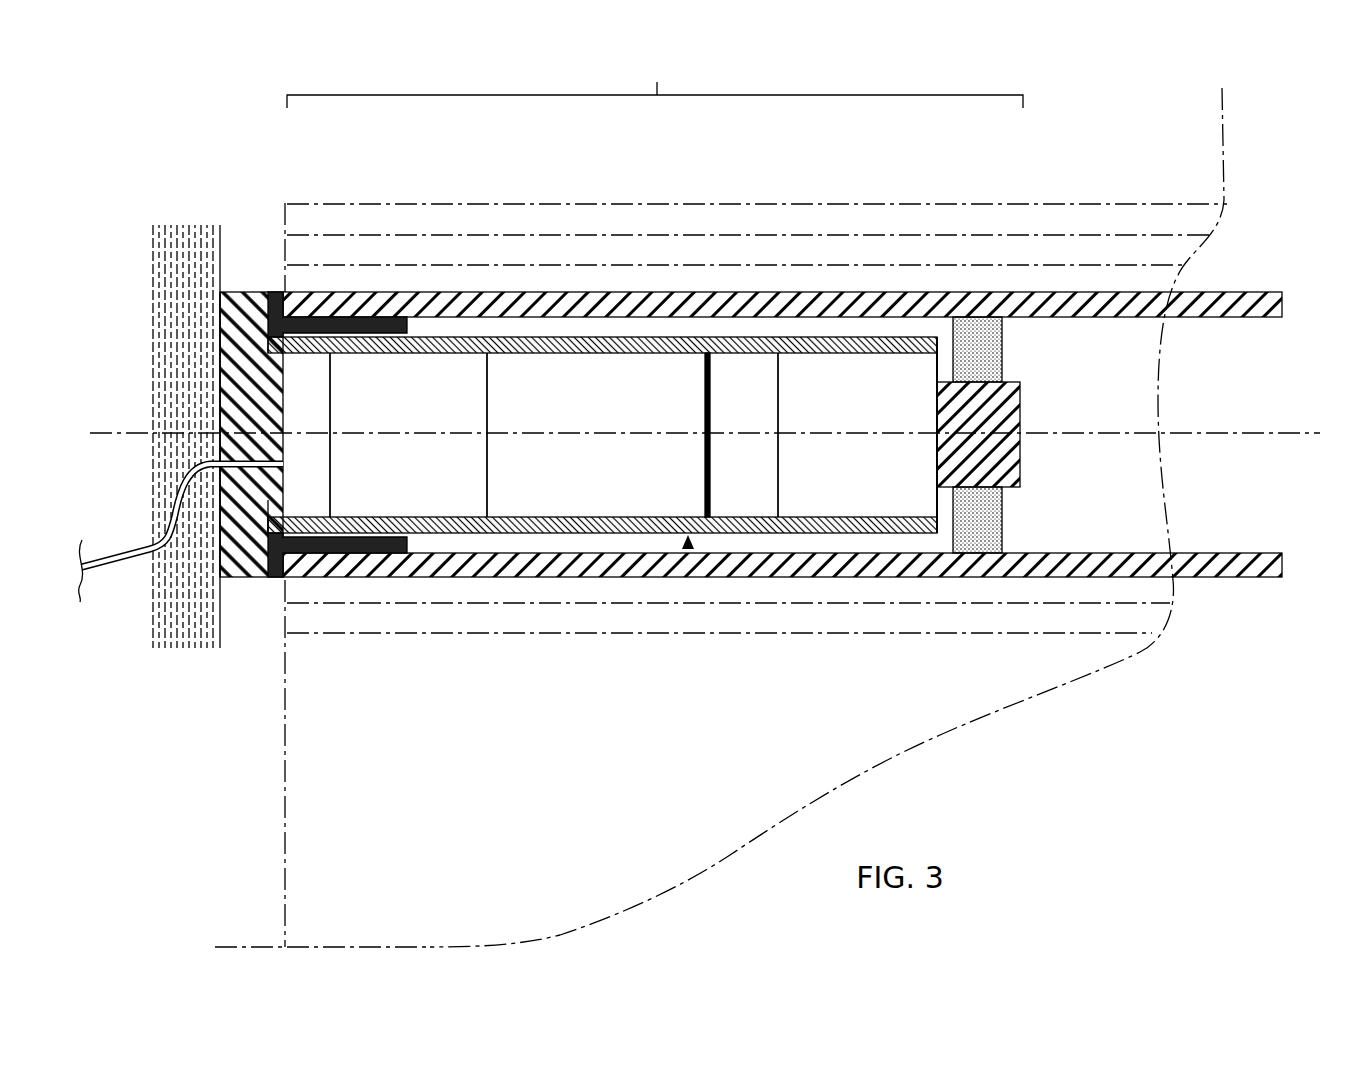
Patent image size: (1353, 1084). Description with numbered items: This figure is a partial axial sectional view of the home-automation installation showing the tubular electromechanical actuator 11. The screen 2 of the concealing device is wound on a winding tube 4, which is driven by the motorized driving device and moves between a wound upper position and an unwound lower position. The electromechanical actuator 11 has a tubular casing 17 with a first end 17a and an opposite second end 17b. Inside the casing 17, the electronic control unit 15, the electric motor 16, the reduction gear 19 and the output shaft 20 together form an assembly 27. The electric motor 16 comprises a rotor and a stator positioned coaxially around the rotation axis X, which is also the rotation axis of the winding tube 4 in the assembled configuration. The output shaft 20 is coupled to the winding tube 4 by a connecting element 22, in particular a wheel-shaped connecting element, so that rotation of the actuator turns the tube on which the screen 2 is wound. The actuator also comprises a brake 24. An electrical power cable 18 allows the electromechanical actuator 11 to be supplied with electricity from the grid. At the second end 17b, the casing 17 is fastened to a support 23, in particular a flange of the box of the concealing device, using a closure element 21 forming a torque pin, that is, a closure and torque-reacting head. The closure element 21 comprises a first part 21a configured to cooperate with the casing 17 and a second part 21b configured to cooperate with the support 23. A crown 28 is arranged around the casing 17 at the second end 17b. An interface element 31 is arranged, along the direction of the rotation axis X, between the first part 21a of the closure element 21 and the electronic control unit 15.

The screen 2 is at (1080, 222).
The winding tube 4 is at (1250, 292).
The electromechanical actuator 11 is at (688, 548).
The electronic control unit 15 is at (408, 388).
The electric motor 16 is at (626, 388).
The casing 17 is at (475, 520).
The first end 17a is at (938, 525).
The second end 17b is at (268, 578).
The electrical power cable 18 is at (118, 560).
The reduction gear 19 is at (870, 388).
The output shaft 20 is at (1017, 292).
The closure element 21 is at (262, 292).
The first part 21a is at (268, 510).
The second part 21b is at (212, 382).
The connecting element 22 is at (985, 523).
The support 23 is at (183, 265).
The brake 24 is at (742, 385).
The assembly 27 is at (655, 75).
The crown 28 is at (335, 550).
The interface element 31 is at (310, 378).
The rotation axis X is at (587, 433).